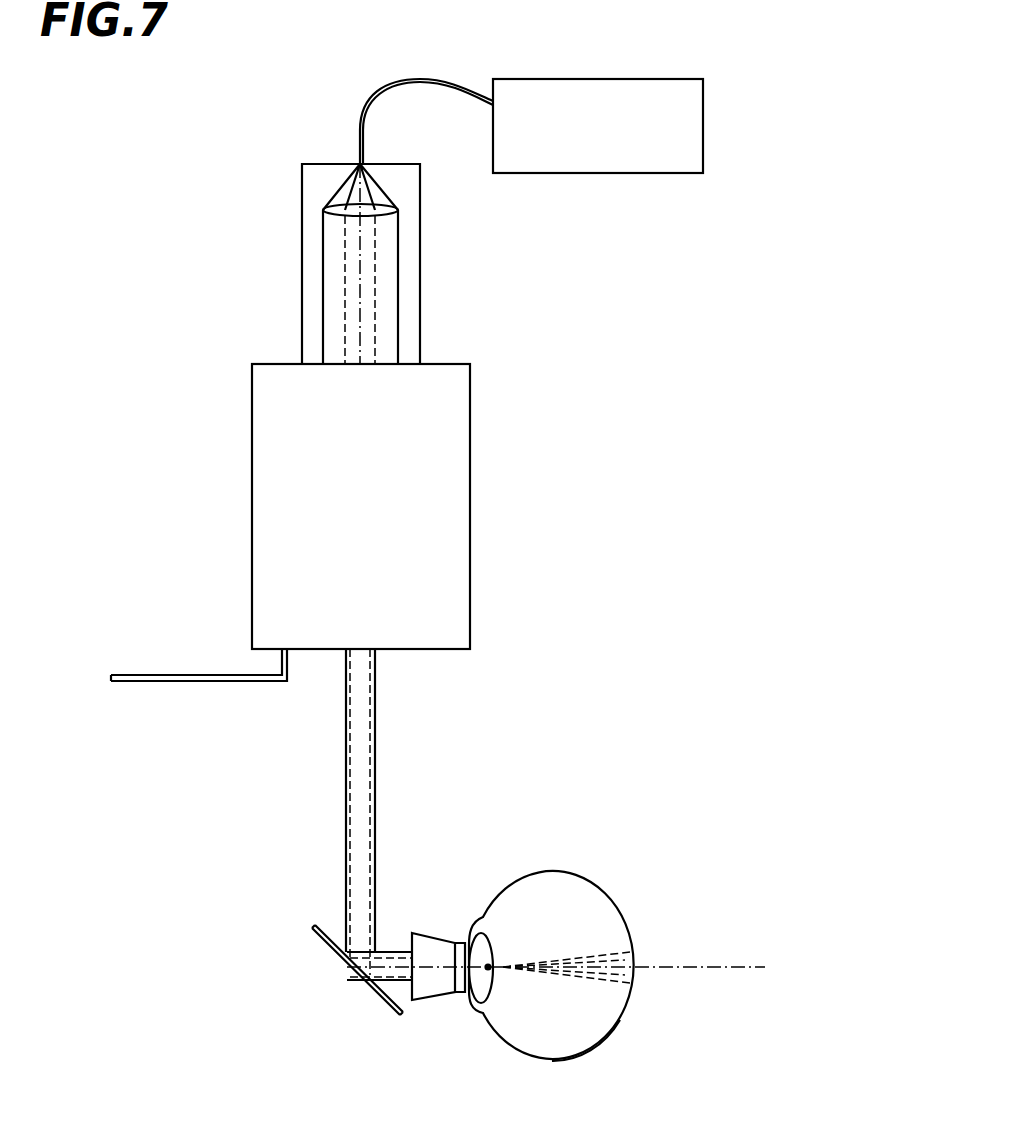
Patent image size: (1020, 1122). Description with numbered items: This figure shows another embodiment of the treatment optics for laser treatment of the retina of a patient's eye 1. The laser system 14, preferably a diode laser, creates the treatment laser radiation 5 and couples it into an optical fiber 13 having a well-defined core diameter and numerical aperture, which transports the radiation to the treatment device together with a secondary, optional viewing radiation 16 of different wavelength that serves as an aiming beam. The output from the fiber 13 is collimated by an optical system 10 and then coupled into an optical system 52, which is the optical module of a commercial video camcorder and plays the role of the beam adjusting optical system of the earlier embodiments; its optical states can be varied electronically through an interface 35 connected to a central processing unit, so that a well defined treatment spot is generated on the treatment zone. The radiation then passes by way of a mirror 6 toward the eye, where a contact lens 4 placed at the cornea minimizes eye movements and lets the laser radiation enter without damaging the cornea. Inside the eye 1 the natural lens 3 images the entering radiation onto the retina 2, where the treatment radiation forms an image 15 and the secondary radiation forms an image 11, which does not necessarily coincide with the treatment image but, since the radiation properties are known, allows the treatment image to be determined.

The patient's eye 1 is at (598, 910).
The retina 2 is at (620, 1020).
The lens 3 is at (478, 918).
The contact lens 4 is at (433, 937).
The treatment laser radiation 5 is at (345, 848).
The mirror 6 is at (405, 1012).
The optical system 10 is at (398, 214).
The image 11 is at (630, 982).
The optical fiber 13 is at (375, 98).
The laser system 14 is at (703, 122).
The image 15 is at (632, 954).
The viewing radiation 16 is at (392, 265).
The interface 35 is at (137, 677).
The optical system 52 is at (446, 443).